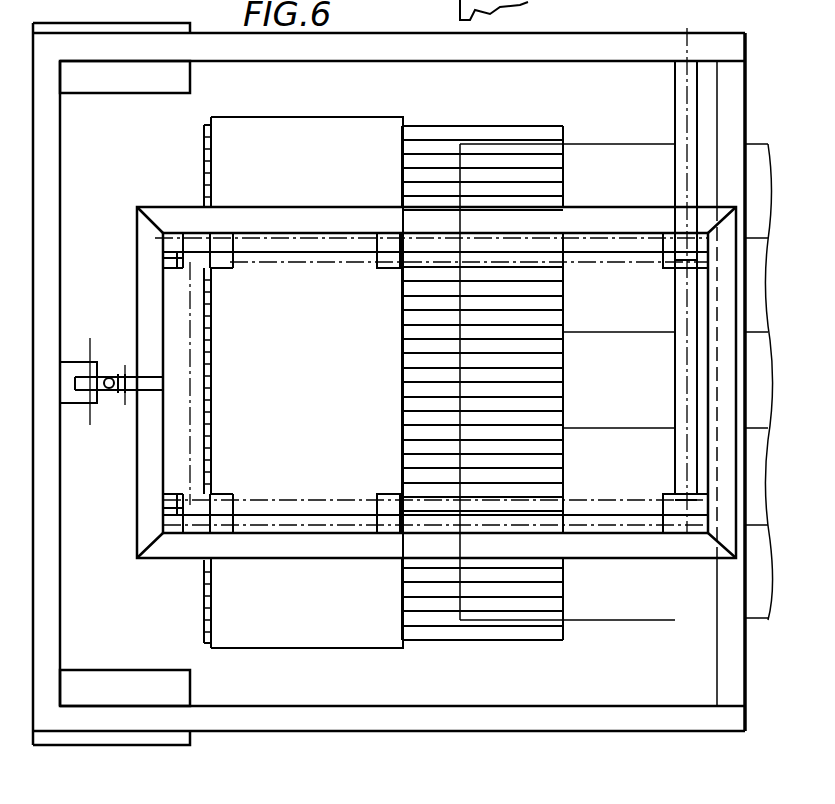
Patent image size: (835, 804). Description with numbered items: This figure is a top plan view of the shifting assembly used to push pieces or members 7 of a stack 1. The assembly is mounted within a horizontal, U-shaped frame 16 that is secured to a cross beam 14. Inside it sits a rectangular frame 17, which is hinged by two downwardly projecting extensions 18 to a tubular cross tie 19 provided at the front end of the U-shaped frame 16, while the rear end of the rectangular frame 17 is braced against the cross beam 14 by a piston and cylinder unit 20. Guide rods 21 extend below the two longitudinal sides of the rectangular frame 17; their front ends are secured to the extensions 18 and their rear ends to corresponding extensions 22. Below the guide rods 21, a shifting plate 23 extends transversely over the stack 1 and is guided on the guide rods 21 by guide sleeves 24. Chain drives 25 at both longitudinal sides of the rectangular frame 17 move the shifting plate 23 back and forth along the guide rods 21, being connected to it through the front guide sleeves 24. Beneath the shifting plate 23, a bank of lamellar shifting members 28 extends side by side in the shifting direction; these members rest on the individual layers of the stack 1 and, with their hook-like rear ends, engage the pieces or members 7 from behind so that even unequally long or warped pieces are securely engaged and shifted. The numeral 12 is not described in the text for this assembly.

The stack 1 is at (768, 622).
The pieces or members 7 is at (628, 397).
The end blocks 12 is at (73, 76).
The cross beam 14 is at (50, 192).
The U-shaped frame 16 is at (757, 18).
The rectangular frame 17 is at (165, 555).
The downwardly projecting extensions 18 is at (670, 254).
The tubular cross tie 19 is at (683, 105).
The piston and cylinder unit 20 is at (95, 385).
The guide rods 21 is at (333, 245).
The extensions 22 is at (175, 255).
The shifting plate 23 is at (272, 645).
The guide sleeves 24 is at (392, 256).
The chain drives 25 is at (246, 260).
The lamellar shifting members 28 is at (433, 640).